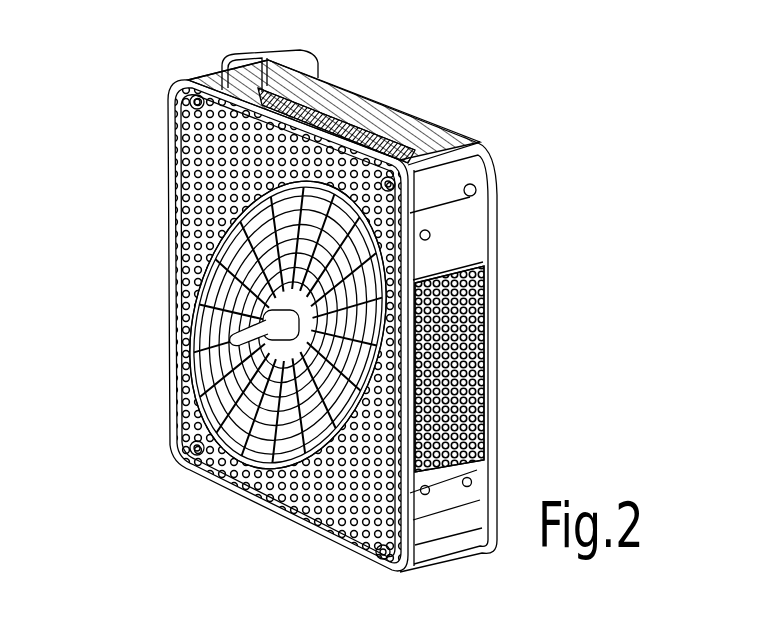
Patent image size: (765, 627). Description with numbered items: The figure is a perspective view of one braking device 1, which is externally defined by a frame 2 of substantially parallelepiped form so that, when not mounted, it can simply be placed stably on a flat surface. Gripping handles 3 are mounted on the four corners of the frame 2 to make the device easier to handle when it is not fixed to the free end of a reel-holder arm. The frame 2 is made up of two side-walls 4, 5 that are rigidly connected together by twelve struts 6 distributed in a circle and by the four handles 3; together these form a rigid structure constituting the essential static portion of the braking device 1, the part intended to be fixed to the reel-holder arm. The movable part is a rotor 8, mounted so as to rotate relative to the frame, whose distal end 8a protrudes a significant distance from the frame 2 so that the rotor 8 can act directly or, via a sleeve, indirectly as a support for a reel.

The braking device 1 is at (184, 501).
The frame 2 is at (488, 297).
The gripping handles 3 is at (442, 180).
The side-wall 4 is at (363, 96).
The side-wall 5 is at (228, 94).
The struts 6 is at (240, 207).
The rotor 8 is at (250, 288).
The distal end of the rotor 8a is at (250, 348).